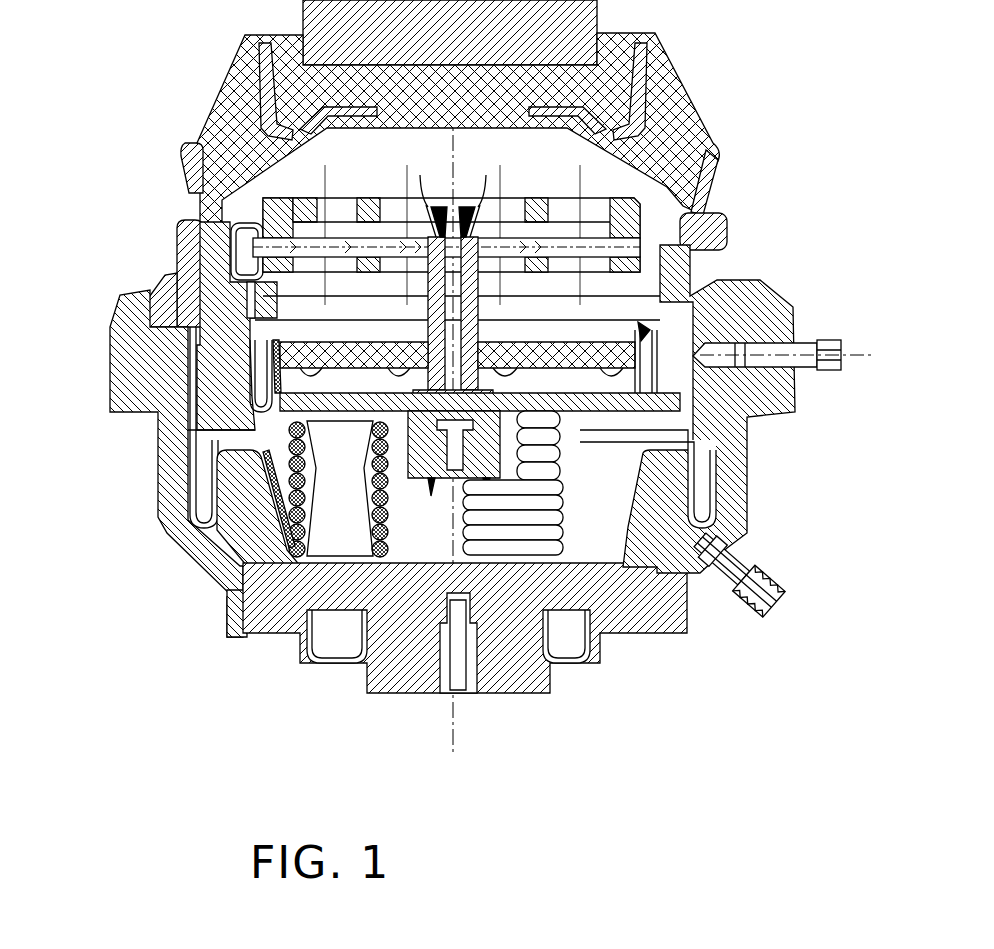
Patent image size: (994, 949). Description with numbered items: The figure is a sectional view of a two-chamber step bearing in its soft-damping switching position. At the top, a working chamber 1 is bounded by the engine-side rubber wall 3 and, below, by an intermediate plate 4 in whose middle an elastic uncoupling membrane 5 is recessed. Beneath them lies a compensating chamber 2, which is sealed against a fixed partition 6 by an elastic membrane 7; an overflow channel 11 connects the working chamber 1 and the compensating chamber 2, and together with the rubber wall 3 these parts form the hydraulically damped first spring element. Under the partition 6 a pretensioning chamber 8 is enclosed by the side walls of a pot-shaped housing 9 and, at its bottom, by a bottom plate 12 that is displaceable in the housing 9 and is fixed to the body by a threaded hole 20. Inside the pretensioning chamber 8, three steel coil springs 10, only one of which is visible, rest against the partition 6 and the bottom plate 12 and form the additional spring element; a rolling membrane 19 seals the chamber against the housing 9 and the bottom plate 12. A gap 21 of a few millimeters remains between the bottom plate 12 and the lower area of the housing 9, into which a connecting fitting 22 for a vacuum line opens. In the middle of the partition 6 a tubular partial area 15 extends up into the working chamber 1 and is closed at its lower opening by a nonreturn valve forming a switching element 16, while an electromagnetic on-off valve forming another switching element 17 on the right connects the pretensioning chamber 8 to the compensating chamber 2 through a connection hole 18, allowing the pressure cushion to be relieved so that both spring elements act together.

The working chamber 1 is at (593, 165).
The compensating chamber 2 is at (187, 245).
The rubber wall 3 is at (653, 93).
The intermediate plate 4 is at (627, 208).
The uncoupling membrane 5 is at (600, 247).
The partition 6 is at (677, 400).
The membrane 7 is at (583, 355).
The pretensioning chamber 8 is at (590, 527).
The pot-shaped housing 9 is at (172, 462).
The coil springs 10 is at (273, 495).
The overflow channel 11 is at (248, 247).
The bottom plate 12 is at (238, 596).
The tubular partial area 15 is at (448, 337).
The switching element 16 is at (452, 458).
The switching element 17 is at (748, 416).
The connection hole 18 is at (713, 358).
The rolling membrane 19 is at (260, 543).
The threaded hole 20 is at (452, 657).
The gap 21 is at (288, 602).
The connecting fitting 22 is at (748, 590).